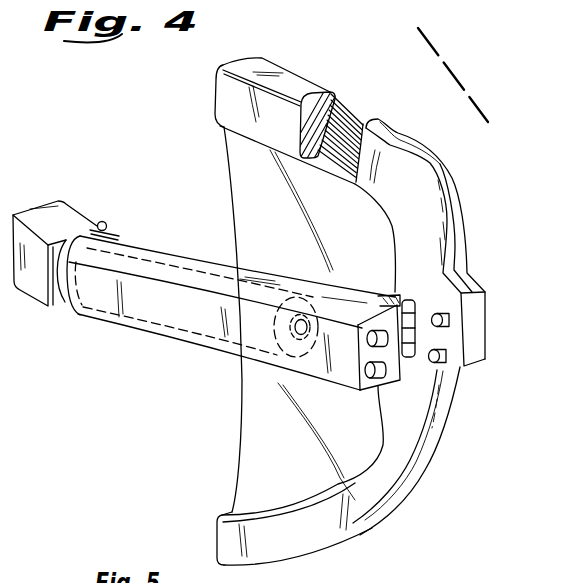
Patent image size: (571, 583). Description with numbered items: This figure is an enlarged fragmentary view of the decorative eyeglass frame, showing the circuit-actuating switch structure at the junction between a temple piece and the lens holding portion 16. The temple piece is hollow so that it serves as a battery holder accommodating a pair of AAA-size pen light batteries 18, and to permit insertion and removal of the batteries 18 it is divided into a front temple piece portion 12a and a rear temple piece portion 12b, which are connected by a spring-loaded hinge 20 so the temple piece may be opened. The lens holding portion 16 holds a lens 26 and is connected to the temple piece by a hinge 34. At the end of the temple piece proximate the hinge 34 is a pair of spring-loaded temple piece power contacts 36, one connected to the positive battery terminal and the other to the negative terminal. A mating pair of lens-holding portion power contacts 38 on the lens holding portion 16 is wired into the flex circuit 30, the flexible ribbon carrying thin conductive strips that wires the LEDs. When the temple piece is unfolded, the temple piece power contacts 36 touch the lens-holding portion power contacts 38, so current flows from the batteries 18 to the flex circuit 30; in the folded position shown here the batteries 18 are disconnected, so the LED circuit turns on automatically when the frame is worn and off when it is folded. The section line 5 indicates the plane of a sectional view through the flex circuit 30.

The section line 5- 5 is at (394, 41).
The front temple piece portion 12a is at (200, 253).
The rear temple piece portion 12b is at (60, 213).
The lens holding portion 16 is at (377, 527).
The batteries 18 is at (152, 330).
The spring-loaded hinge 20 is at (108, 226).
The lenses 26 is at (265, 432).
The flex circuit 30 is at (338, 128).
The hinge 34 is at (400, 283).
The temple piece power contacts 36 is at (388, 340).
The lens-holding portion power contacts 38 is at (452, 321).